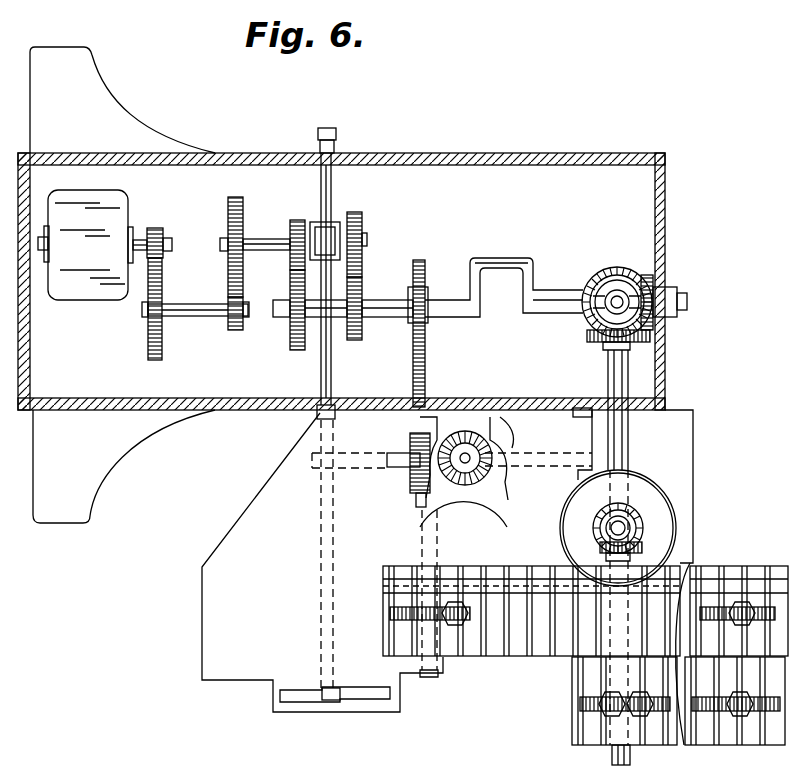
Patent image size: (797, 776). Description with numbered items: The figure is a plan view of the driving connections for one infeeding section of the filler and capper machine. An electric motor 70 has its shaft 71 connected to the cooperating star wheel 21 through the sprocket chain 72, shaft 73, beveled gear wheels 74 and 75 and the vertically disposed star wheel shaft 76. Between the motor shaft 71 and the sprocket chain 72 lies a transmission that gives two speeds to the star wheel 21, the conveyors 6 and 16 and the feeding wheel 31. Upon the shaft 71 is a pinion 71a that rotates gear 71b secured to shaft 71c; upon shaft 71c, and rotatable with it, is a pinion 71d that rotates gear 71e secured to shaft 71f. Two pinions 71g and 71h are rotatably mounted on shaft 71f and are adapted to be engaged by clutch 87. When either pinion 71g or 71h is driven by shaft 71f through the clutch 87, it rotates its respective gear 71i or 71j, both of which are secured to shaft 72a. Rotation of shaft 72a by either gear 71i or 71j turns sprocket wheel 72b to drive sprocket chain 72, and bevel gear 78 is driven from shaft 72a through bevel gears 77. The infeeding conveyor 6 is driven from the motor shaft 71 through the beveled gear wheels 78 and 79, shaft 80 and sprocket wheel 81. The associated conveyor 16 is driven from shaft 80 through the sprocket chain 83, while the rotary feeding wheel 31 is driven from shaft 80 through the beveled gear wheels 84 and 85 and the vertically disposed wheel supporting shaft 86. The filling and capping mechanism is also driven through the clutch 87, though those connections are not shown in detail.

The electric motor 70 is at (85, 245).
The motor shaft 71 is at (145, 237).
The pinion 71a is at (159, 229).
The gear 71b is at (162, 284).
The shaft 71c is at (182, 318).
The pinion 71d is at (233, 331).
The gear 71e is at (230, 283).
The shaft 71f is at (258, 238).
The pinion 71g is at (297, 220).
The pinion 71h is at (361, 211).
The gear 71i is at (290, 279).
The gear 71j is at (361, 286).
The clutch 87 is at (338, 222).
The sprocket chain 72 is at (424, 375).
The shaft 72a is at (443, 300).
The sprocket wheel 72b is at (430, 277).
The star wheel 21 is at (493, 417).
The bevel gears 77 is at (645, 286).
The bevel gear wheel 78 is at (633, 251).
The bevel gear wheel 79 is at (592, 338).
The shaft 80 is at (631, 547).
The wheel supporting shaft 86 is at (632, 514).
The rotary feeding wheel 31 is at (670, 516).
The bevel gear wheel 85 is at (643, 528).
The bevel gear wheel 84 is at (642, 548).
The conveyor 16 is at (748, 575).
The sprocket chain 83 is at (527, 579).
The shaft 73 is at (377, 467).
The bevel gear wheel 74 is at (422, 511).
The bevel gear wheel 75 is at (466, 464).
The star wheel shaft 76 is at (478, 510).
The sprocket wheel 81 is at (578, 704).
The infeeding conveyor 6 is at (720, 737).